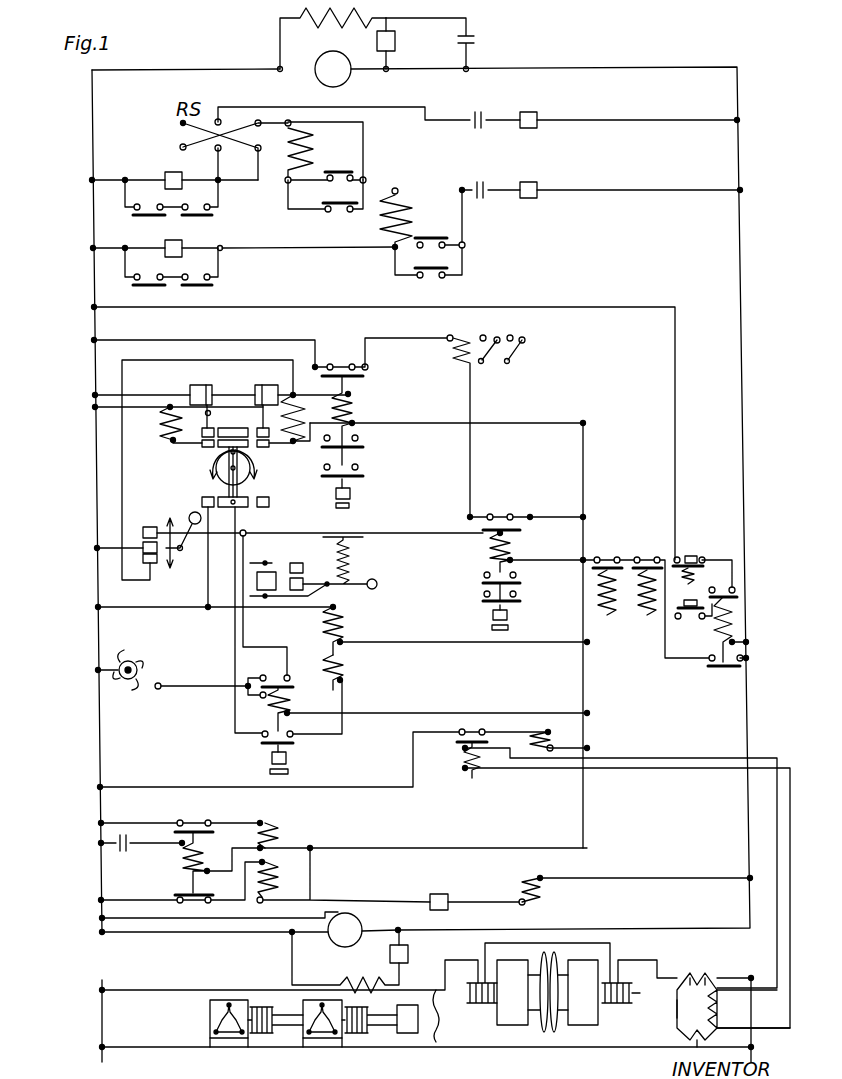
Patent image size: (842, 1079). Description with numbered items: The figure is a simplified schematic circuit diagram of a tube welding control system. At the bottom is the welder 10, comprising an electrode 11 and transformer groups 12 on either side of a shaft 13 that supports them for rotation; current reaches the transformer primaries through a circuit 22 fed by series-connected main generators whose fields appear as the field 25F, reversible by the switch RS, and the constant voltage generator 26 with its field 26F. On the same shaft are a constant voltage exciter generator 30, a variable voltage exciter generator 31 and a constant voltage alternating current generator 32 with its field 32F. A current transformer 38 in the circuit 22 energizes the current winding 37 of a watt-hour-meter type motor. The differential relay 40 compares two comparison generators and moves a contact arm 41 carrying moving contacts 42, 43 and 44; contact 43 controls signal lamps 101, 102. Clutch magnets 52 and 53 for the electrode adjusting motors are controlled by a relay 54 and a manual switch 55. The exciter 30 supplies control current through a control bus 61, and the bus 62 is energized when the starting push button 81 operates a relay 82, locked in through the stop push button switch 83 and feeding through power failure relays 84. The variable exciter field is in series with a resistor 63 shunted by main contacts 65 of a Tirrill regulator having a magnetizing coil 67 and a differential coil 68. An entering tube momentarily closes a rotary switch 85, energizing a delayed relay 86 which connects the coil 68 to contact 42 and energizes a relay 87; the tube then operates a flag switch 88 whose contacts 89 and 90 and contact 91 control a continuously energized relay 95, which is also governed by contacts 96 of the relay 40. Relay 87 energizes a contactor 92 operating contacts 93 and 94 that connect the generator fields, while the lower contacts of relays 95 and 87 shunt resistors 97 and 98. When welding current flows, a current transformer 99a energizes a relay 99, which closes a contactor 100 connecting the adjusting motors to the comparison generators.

The welder 10 is at (540, 1022).
The electrode 11 is at (553, 1030).
The transformer groups 12 is at (498, 1018).
The shaft 13 is at (632, 995).
The circuit 22 is at (448, 1016).
The field winding of generator 25 25F is at (319, 151).
The constant voltage generator 26 is at (238, 1040).
The field winding of generator 26 26F is at (418, 217).
The exciter generator 30 is at (360, 967).
The variable voltage exciter generator 31 is at (348, 47).
The constant voltage alternating current generator 32 is at (408, 1034).
The field winding of generator 32 32F is at (590, 891).
The current winding 37 is at (692, 1009).
The current transformer 38 is at (714, 998).
The differential relay 40 is at (250, 473).
The contact arm 41 is at (228, 490).
The moving contact 42 is at (243, 509).
The moving contact 43 is at (218, 453).
The moving contact 44 is at (233, 428).
The clutch magnet 52 is at (283, 876).
The clutch magnet 53 is at (280, 830).
The relay 54 is at (166, 873).
The manual switch 55 is at (141, 854).
The control bus 61 is at (95, 470).
The bus 62 is at (744, 487).
The resistor 63 is at (395, 45).
The main contacts 65 is at (474, 44).
The magnetizing coil 67 is at (340, 619).
The differential coil 68 is at (341, 664).
The starting push button 81 is at (685, 620).
The relay 82 is at (732, 626).
The stop push button switch 83 is at (690, 556).
The power failure relays 84 is at (648, 565).
The rotary switch 85 is at (130, 660).
The relay 86 is at (288, 700).
The relay 87 is at (512, 547).
The flag switch 88 is at (183, 545).
The contact 89 is at (143, 532).
The contact 90 is at (143, 560).
The contact 91 is at (147, 527).
The contactor 92 is at (452, 350).
The contact 93 is at (478, 112).
The contact 94 is at (480, 182).
The relay 95 is at (355, 408).
The contacts 96 is at (262, 388).
The resistor 97 is at (170, 172).
The resistor 98 is at (178, 244).
The relay 99 is at (464, 757).
The current transformer 99a is at (720, 1002).
The contactor 100 is at (560, 739).
The contacts 101 is at (164, 422).
The signal lamp 102 is at (312, 414).